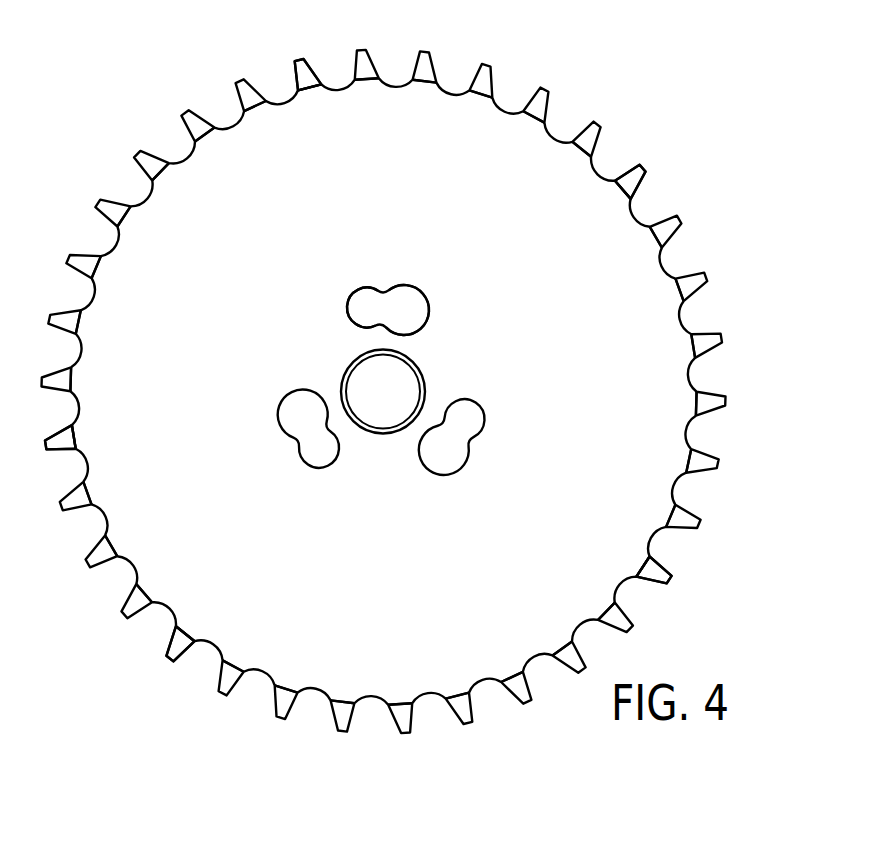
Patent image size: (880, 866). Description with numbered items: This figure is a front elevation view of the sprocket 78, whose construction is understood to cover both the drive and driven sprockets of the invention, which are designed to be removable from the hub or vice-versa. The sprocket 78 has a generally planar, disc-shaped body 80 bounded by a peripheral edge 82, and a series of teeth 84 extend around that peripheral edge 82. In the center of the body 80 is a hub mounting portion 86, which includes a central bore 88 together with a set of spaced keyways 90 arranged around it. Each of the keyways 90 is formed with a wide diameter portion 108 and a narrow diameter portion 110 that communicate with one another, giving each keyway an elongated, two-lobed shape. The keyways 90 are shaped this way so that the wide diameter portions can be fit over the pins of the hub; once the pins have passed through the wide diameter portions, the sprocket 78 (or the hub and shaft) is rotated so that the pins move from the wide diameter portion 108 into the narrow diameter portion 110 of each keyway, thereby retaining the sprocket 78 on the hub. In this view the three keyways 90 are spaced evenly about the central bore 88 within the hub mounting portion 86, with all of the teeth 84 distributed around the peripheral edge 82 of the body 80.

The sprocket 78 is at (665, 73).
The body 80 is at (220, 342).
The peripheral edge 82 is at (280, 102).
The teeth 84 is at (640, 185).
The hub mounting portion 86 is at (475, 338).
The central bore 88 is at (398, 408).
The keyways 90 is at (357, 275).
The wide diameter portion 108 is at (410, 285).
The narrow diameter portion 110 is at (348, 316).